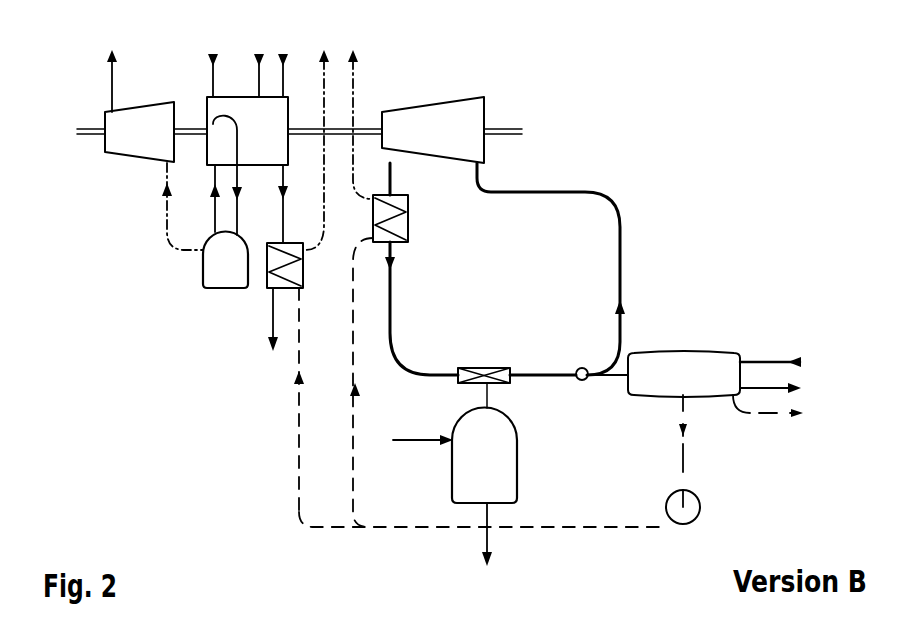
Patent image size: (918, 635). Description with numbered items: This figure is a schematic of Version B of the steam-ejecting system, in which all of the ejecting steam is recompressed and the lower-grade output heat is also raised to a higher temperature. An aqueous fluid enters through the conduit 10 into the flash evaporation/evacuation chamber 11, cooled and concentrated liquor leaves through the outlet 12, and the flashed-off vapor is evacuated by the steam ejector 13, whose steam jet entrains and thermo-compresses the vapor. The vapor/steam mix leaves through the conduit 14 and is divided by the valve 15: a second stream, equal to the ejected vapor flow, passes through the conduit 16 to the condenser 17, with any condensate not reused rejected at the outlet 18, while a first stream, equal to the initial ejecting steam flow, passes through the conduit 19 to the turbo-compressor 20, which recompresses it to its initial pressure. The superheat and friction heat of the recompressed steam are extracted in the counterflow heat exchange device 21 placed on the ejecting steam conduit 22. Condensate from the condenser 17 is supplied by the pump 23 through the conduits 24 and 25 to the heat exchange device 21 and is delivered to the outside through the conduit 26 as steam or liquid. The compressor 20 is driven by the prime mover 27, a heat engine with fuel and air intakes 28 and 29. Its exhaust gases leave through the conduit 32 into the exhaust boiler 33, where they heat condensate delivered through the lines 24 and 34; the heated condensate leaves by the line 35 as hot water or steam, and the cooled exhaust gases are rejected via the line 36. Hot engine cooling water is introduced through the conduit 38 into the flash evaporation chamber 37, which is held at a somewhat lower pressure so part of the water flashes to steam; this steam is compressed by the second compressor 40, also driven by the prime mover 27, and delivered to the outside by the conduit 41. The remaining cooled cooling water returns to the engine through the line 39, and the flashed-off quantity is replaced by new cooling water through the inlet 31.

The conduit 10 is at (423, 433).
The flash evaporation/evacuation chamber 11 is at (484, 456).
The outlet 12 is at (499, 534).
The steam ejector 13 is at (484, 377).
The conduit 14 is at (543, 365).
The valve 15 is at (582, 363).
The conduit 16 is at (608, 386).
The condenser 17 is at (714, 374).
The outlet 18 is at (768, 416).
The conduit 19 is at (551, 269).
The turbo-compressor 20 is at (433, 130).
The counterflow heat exchange device 21 is at (403, 202).
The ejecting steam conduit 22 is at (421, 308).
The pump 23 is at (695, 507).
The conduit 24 is at (503, 461).
The conduit 25 is at (365, 382).
The conduit 26 is at (357, 115).
The prime mover 27 is at (247, 131).
The fuel intake 28 is at (283, 64).
The air intake 29 is at (258, 64).
The inlet 31 is at (213, 64).
The conduit 32 is at (293, 204).
The exhaust boiler 33 is at (297, 265).
The line 34 is at (309, 400).
The line 35 is at (320, 141).
The line 36 is at (262, 319).
The flash evaporation chamber 37 is at (205, 225).
The conduit 38 is at (238, 175).
The line 39 is at (206, 198).
The second compressor 40 is at (139, 132).
The conduit 41 is at (110, 72).